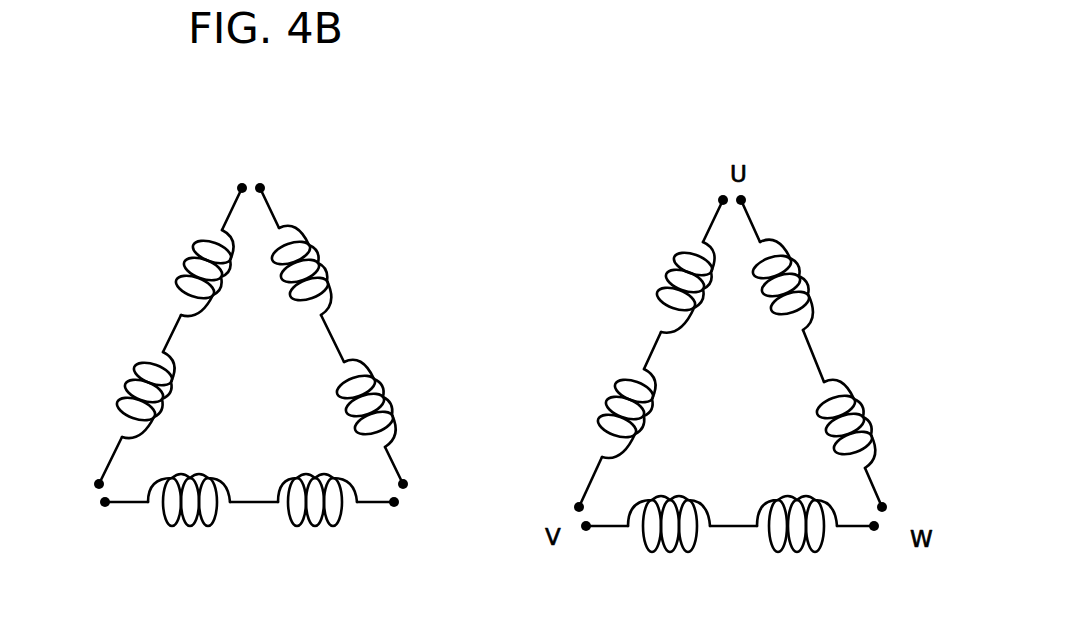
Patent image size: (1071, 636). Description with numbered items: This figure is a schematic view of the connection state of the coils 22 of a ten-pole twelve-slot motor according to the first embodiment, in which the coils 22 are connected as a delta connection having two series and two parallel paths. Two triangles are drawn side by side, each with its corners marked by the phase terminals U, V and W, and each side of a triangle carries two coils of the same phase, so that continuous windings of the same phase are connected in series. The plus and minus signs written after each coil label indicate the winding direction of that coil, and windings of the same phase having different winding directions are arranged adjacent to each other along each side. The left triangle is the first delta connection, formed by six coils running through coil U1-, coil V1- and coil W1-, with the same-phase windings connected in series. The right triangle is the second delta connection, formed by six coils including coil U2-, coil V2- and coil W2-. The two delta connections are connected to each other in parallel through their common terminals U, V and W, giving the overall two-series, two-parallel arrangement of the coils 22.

The coil 22 is at (264, 359).
The U-phase terminal U is at (252, 175).
The V-phase terminal V is at (88, 503).
The W-phase terminal W is at (420, 503).
The U-phase coil U1- is at (193, 273).
The coil W1− W1- is at (391, 403).
The V-phase coil V1- is at (317, 517).
The coil U2− U2- is at (674, 287).
The W-phase coil W2- is at (873, 424).
The V-phase coil V2- is at (797, 543).